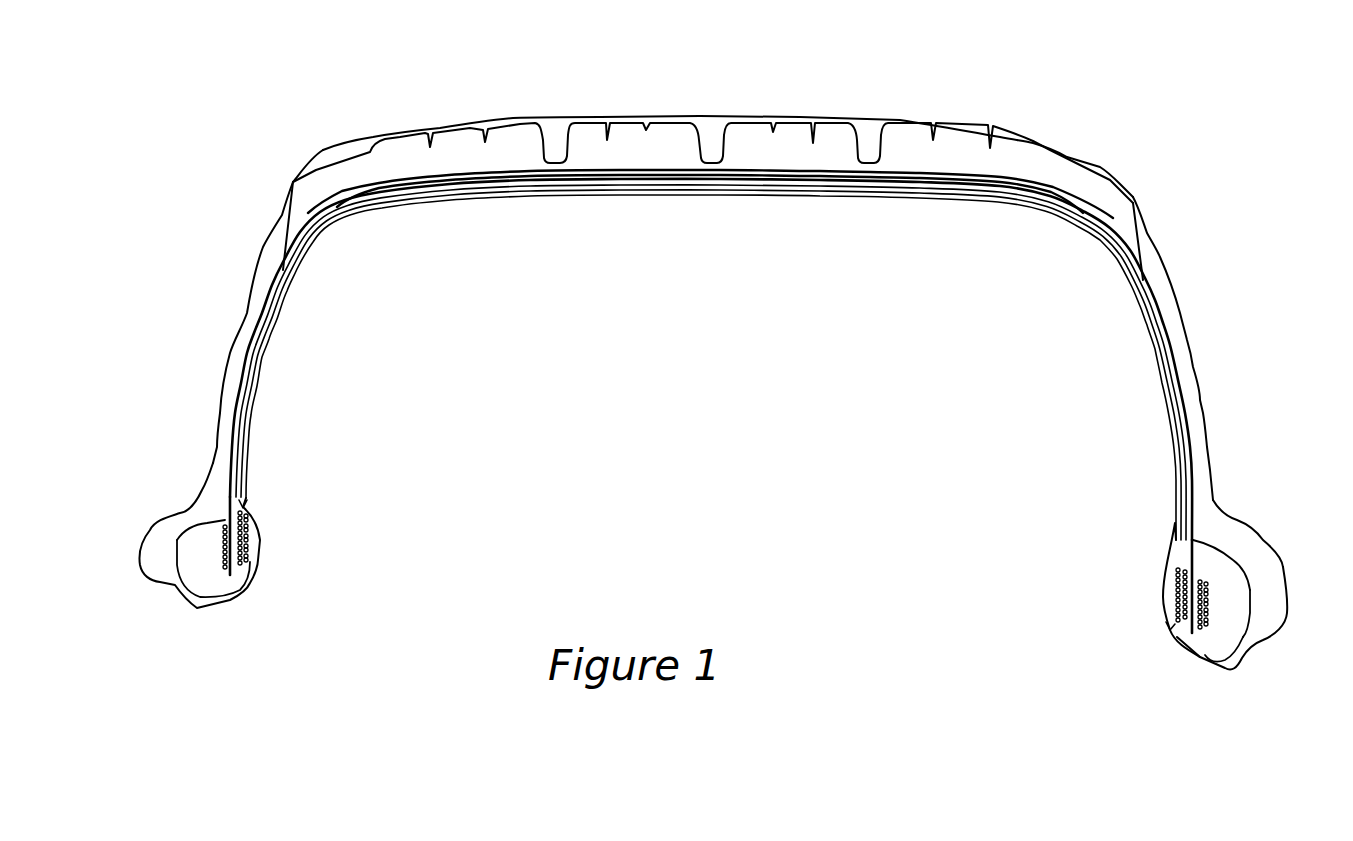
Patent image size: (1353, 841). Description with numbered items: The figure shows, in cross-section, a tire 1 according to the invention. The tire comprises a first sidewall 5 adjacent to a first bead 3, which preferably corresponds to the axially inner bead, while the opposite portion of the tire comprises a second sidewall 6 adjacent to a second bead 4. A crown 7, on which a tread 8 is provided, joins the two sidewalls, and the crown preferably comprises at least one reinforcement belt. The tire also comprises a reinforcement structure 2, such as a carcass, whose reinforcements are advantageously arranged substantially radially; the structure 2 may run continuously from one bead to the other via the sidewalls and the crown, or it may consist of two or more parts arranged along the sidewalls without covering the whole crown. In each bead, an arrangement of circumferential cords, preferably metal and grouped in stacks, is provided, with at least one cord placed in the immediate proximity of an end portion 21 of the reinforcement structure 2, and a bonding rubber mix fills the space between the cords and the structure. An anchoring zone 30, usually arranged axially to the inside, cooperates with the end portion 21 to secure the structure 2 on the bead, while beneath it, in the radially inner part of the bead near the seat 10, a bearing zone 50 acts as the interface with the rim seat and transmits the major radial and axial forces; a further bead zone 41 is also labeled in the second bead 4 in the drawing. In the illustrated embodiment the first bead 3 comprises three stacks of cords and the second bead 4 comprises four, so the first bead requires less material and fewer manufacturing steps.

The tire 1 is at (1117, 108).
The reinforcement structure 2 is at (1187, 423).
The first bead 3 is at (213, 580).
The second bead 4 is at (1263, 620).
The first sidewall 5 is at (253, 345).
The second sidewall 6 is at (1180, 313).
The crown 7 is at (775, 183).
The tread 8 is at (620, 118).
The seat 10 is at (1198, 668).
The end portion 21 is at (1190, 650).
The anchoring zone 30 is at (1223, 587).
The bead filler 41 is at (1227, 605).
The bearing zone 50 is at (1210, 653).